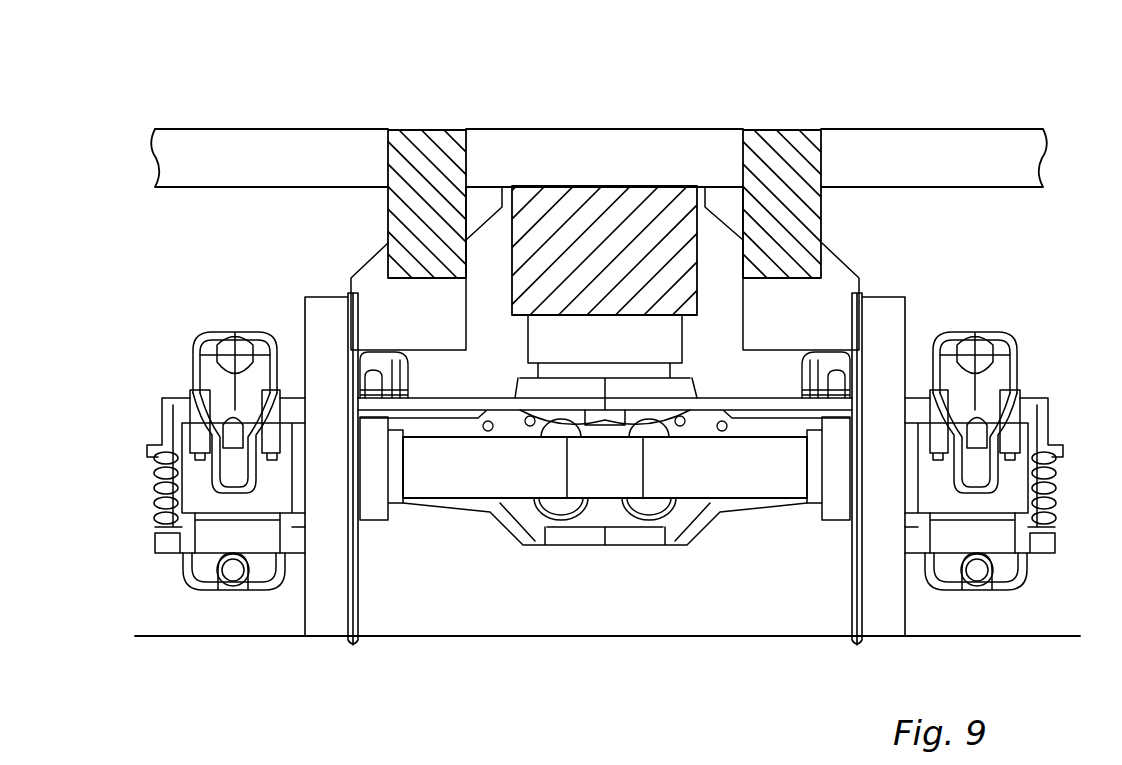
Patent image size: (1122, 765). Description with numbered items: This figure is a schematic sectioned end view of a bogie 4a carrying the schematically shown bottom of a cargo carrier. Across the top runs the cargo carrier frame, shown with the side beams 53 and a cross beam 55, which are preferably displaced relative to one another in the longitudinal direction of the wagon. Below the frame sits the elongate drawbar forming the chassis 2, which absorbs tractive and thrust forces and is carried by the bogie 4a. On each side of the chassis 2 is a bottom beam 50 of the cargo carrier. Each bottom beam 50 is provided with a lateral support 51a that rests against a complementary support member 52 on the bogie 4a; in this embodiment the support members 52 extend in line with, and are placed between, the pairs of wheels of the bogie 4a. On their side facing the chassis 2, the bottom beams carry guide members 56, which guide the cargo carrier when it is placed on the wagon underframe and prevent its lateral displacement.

The chassis 2 is at (643, 200).
The bogie 4a is at (1007, 343).
The bottom beam 50 is at (797, 224).
The lateral support 51a is at (832, 297).
The support member 52 is at (840, 360).
The side beam 53 is at (912, 148).
The cross beam 55 is at (568, 145).
The guide member 56 is at (727, 195).